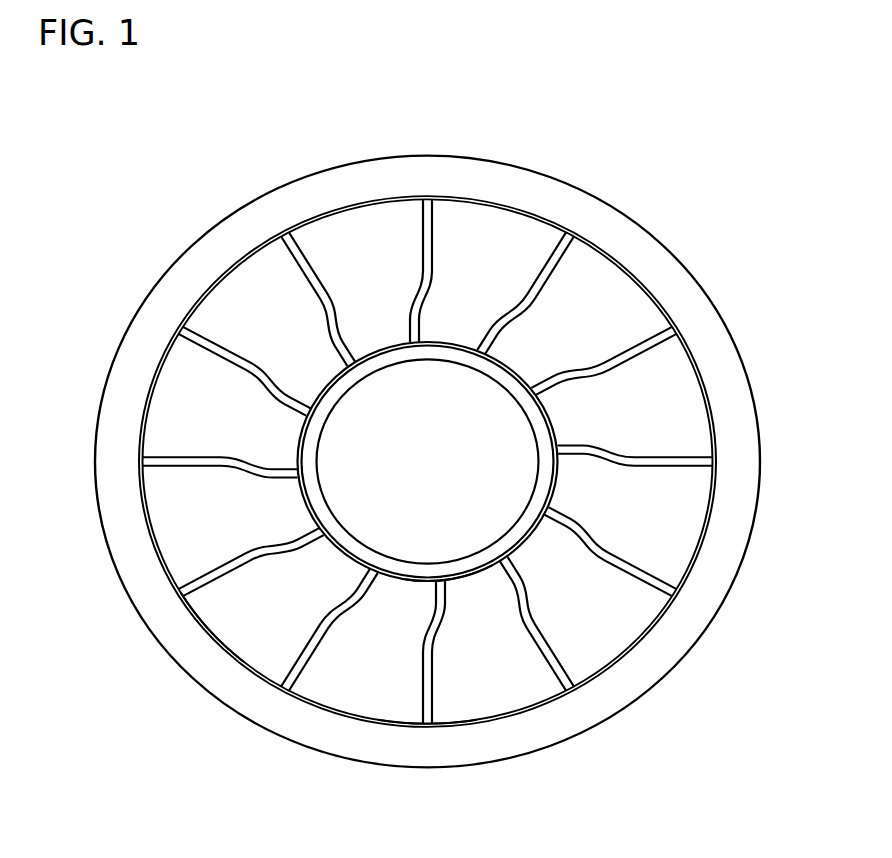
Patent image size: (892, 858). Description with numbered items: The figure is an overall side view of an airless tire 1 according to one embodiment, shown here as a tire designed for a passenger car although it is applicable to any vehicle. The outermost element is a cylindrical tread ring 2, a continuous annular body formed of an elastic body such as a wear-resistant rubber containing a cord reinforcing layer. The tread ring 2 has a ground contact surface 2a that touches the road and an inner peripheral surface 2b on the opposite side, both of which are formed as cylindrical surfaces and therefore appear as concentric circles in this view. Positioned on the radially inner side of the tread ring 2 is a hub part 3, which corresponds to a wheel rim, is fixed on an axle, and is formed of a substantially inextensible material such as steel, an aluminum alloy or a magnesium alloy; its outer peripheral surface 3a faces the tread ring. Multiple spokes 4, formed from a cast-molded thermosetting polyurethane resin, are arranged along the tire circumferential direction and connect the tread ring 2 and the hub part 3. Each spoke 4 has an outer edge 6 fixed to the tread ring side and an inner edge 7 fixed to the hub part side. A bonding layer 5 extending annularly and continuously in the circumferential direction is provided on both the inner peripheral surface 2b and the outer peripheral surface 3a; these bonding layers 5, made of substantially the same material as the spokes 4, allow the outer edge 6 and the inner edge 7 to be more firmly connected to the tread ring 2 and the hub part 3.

The airless tire 1 is at (645, 152).
The tread ring 2 is at (277, 205).
The ground contact surface 2a is at (695, 281).
The inner peripheral surface 2b is at (710, 398).
The hub part 3 is at (338, 392).
The outer peripheral surface 3a is at (490, 558).
The spoke 4 is at (420, 233).
The bonding layer 5 is at (472, 572).
The outer edge 6 is at (425, 732).
The inner edge 7 is at (428, 577).